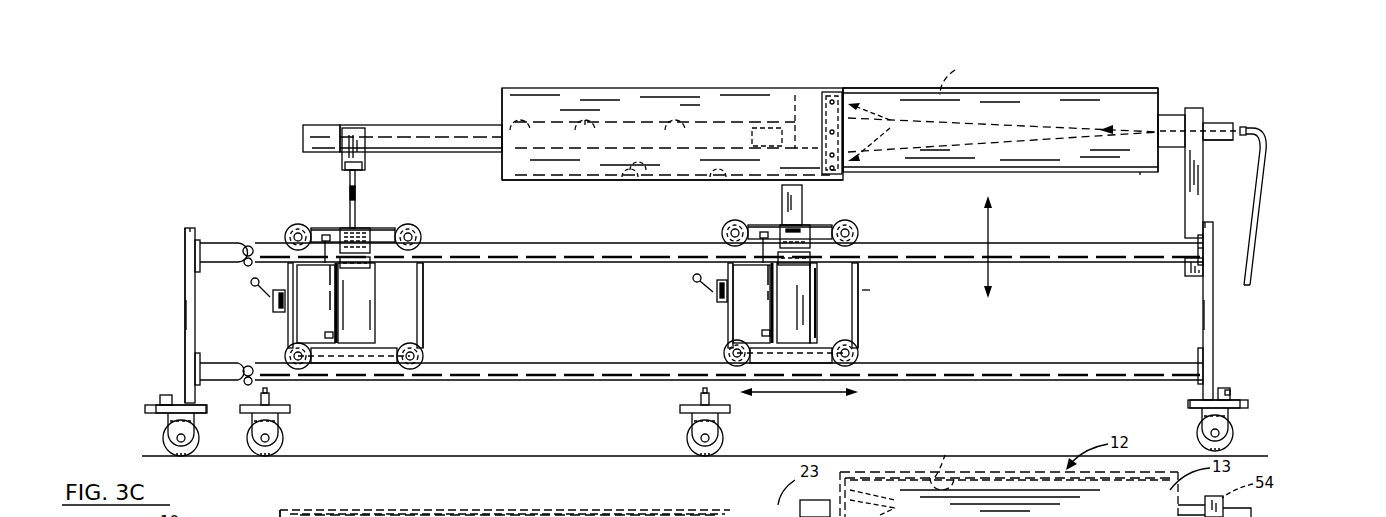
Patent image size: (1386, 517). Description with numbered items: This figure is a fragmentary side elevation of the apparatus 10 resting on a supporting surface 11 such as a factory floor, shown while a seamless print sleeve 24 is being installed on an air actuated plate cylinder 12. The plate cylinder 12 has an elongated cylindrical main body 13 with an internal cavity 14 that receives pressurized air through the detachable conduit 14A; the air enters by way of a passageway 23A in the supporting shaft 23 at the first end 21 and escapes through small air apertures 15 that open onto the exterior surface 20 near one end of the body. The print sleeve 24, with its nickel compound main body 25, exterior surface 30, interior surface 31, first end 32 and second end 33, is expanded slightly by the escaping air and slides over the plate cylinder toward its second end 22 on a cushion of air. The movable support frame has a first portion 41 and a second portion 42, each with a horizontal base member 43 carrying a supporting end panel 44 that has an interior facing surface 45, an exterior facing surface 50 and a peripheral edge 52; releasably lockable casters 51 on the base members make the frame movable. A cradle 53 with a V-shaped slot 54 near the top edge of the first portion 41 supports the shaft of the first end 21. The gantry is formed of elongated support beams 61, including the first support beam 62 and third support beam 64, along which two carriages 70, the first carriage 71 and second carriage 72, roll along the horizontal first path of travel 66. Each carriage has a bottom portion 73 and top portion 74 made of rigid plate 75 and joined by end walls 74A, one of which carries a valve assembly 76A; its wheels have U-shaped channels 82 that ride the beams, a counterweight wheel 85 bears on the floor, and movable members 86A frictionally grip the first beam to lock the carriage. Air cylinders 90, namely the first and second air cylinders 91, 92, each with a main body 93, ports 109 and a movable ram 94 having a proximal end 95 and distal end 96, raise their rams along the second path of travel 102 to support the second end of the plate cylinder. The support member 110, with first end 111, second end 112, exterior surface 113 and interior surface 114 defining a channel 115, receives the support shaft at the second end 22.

The apparatus 10 is at (260, 126).
The supporting surface 11 is at (1015, 455).
The air actuated plate cylinder 12 is at (1018, 68).
The main body 13 is at (1085, 88).
The internal cavity 14 is at (950, 269).
The detachable conduit 14A is at (1270, 170).
The small air apertures 15 is at (1003, 309).
The exterior surface 20 is at (870, 90).
The first end 21 is at (1152, 178).
The second end 22 is at (850, 88).
The supporting shaft 23 is at (800, 92).
The passageway 23A is at (1212, 142).
The seamless print sleeve 24 is at (640, 80).
The main body 25 is at (640, 182).
The exterior surface 30 is at (530, 182).
The interior surface 31 is at (623, 185).
The first end 32 is at (830, 90).
The second end 33 is at (510, 88).
The first portion 41 is at (1228, 260).
The second portion 42 is at (170, 310).
The horizontal base member 43 is at (152, 403).
The supporting end panel 44 is at (184, 280).
The interior facing surface 45 is at (196, 328).
The exterior facing surface 50 is at (185, 250).
The releasably lockable caster 51 is at (162, 443).
The peripheral edge 52 is at (190, 228).
The cradle 53 is at (1218, 192).
The V-shaped slot 54 is at (1202, 108).
The elongated support beam 61 is at (582, 262).
The first support beam 62 is at (645, 262).
The third support beam 64 is at (603, 363).
The first path of travel 66 is at (788, 395).
The carriage 70 is at (385, 210).
The first carriage 71 is at (878, 282).
The second carriage 72 is at (435, 302).
The bottom portion 73 is at (360, 365).
The top portion 74 is at (322, 228).
The end wall 74A is at (424, 288).
The rigid plate 75 is at (400, 228).
The valve assembly 76A is at (276, 302).
The U-shaped channel 82 is at (425, 348).
The counterweight wheel 85 is at (283, 430).
The movable member 86A is at (362, 258).
The air cylinder 90 is at (822, 326).
The first air cylinder 91 is at (800, 300).
The second air cylinder 92 is at (364, 303).
The main body 93 is at (334, 300).
The movable ram 94 is at (358, 196).
The proximal end 95 is at (348, 228).
The distal end 96 is at (365, 176).
The second path of travel 102 is at (990, 276).
The port 109 is at (326, 333).
The support member 110 is at (462, 124).
The first end 111 is at (775, 126).
The second end 112 is at (312, 124).
The exterior surface 113 is at (585, 125).
The interior surface 114 is at (668, 128).
The channel 115 is at (516, 128).